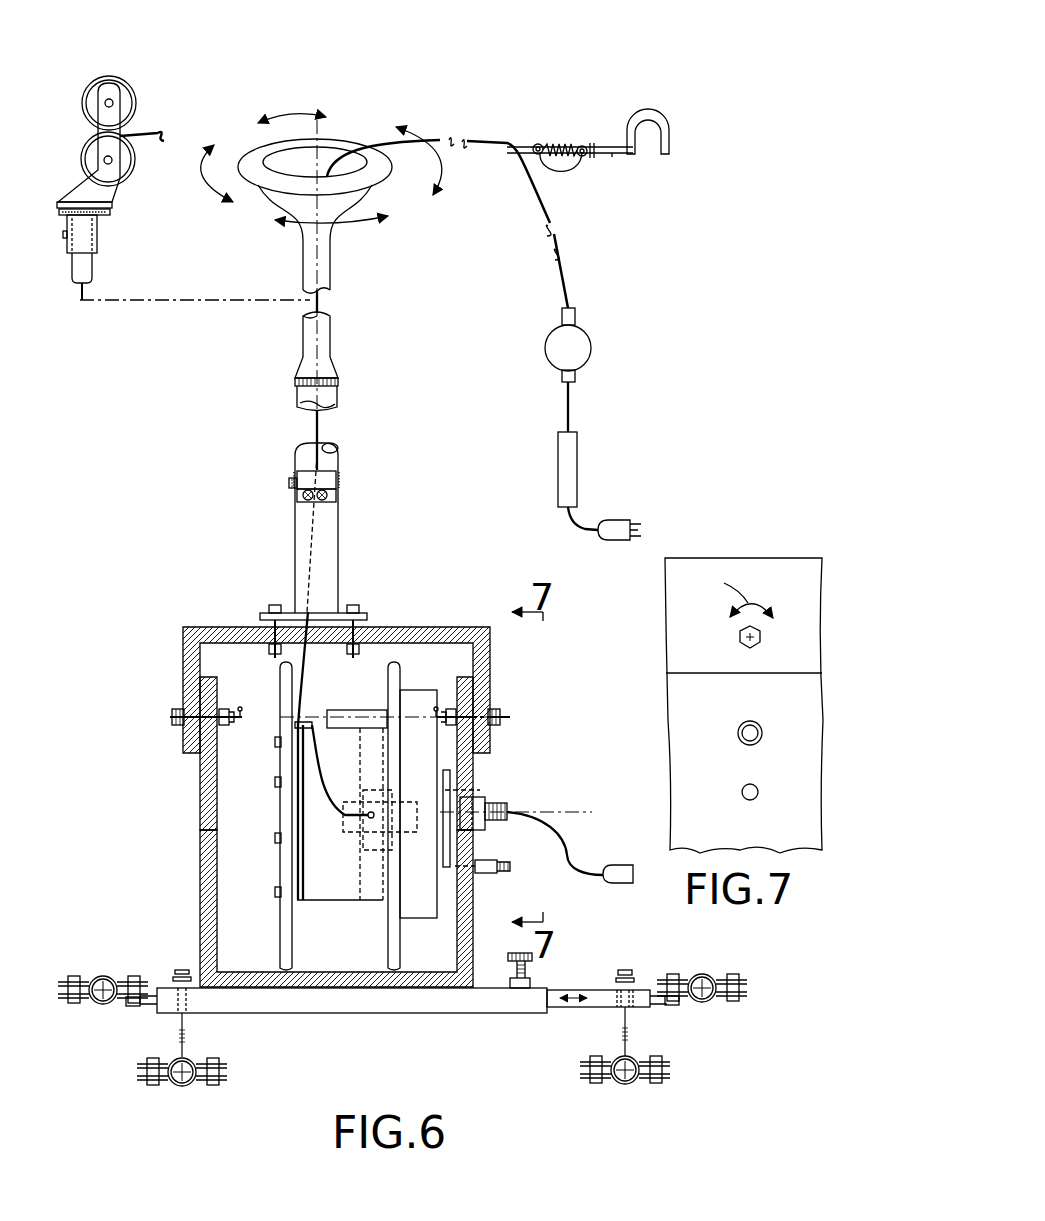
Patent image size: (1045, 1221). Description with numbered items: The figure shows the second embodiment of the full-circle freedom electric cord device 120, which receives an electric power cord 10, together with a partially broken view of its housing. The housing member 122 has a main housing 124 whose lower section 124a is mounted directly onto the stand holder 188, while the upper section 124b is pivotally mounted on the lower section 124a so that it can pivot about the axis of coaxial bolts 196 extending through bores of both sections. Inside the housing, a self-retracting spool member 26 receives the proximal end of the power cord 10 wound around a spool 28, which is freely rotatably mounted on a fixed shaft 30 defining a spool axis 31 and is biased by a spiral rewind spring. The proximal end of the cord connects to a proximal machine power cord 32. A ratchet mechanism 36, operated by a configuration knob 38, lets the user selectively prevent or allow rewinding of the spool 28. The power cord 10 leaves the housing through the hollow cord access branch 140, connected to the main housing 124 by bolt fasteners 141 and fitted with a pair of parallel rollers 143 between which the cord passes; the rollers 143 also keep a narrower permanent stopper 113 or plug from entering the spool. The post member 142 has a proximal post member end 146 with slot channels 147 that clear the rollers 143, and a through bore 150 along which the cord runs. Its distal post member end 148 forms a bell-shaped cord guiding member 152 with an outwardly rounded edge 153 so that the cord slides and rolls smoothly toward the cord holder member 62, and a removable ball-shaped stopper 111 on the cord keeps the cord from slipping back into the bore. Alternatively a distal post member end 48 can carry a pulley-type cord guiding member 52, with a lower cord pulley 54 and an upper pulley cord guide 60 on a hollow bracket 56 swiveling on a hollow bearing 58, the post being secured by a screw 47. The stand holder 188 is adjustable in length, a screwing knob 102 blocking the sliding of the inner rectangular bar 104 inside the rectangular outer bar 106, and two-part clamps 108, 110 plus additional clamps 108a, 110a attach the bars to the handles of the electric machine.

In FIG. 6, the power cord 10 is at (140, 130).
In FIG. 6, the self-retracting spool member 26 is at (436, 671).
In FIG. 6, the spool 28 is at (394, 645).
In FIG. 6, the fixed shaft 30 is at (488, 806).
In FIG. 7, the fixed shaft 30 is at (738, 734).
In FIG. 6, the spool axis 31 is at (575, 811).
In FIG. 6, the proximal machine power cord 32 is at (568, 850).
In FIG. 6, the ratchet mechanism 36 is at (502, 876).
In FIG. 7, the ratchet mechanism 36 is at (750, 784).
In FIG. 6, the configuration knob 38 is at (510, 867).
In FIG. 6, the screw 47 is at (289, 483).
In FIG. 6, the distal post member end 48 is at (92, 268).
In FIG. 6, the cord guiding member 52 is at (136, 159).
In FIG. 6, the lower cord pulley 54 is at (132, 163).
In FIG. 6, the hollow bracket 56 is at (103, 194).
In FIG. 6, the hollow bearing 58 is at (118, 213).
In FIG. 6, the pulley cord guide 60 is at (95, 80).
In FIG. 6, the cord holder member 62 is at (612, 181).
In FIG. 6, the screwing knob 102 is at (520, 953).
In FIG. 6, the inner rectangular bar 104 is at (580, 1008).
In FIG. 6, the rectangular outer bar 106 is at (400, 1013).
In FIG. 6, the two-part clamp 108 is at (715, 974).
In FIG. 6, the additional two-part clamp 108a is at (640, 1084).
In FIG. 6, the two-part clamp 110 is at (100, 975).
In FIG. 6, the additional two-part clamp 110a is at (172, 1086).
In FIG. 6, the removable ball-shaped stopper 111 is at (578, 348).
In FIG. 6, the permanent stopper 113 is at (568, 468).
In FIG. 6, the 360-degree freedom electric cord device 120 is at (609, 131).
In FIG. 6, the housing member 122 is at (567, 424).
In FIG. 6, the main housing 124 is at (455, 627).
In FIG. 6, the lower section 124a is at (210, 786).
In FIG. 7, the lower section 124a is at (676, 698).
In FIG. 6, the upper section 124b is at (210, 690).
In FIG. 7, the upper section 124b is at (690, 646).
In FIG. 6, the hollow cord access branch 140 is at (295, 531).
In FIG. 6, the bolt fasteners 141 is at (297, 499).
In FIG. 6, the post member 142 is at (283, 393).
In FIG. 6, the rollers 143 is at (312, 501).
In FIG. 6, the proximal post member end 146 is at (300, 461).
In FIG. 6, the slot channels 147 is at (336, 476).
In FIG. 6, the distal post member end 148 is at (305, 274).
In FIG. 6, the through bore 150 is at (322, 291).
In FIG. 6, the cord guiding member 152 is at (348, 206).
In FIG. 6, the outwardly rounded edge 153 is at (253, 148).
In FIG. 6, the stand holder 188 is at (342, 1020).
In FIG. 6, the coaxial bolts 196 is at (184, 717).
In FIG. 7, the coaxial bolts 196 is at (739, 636).